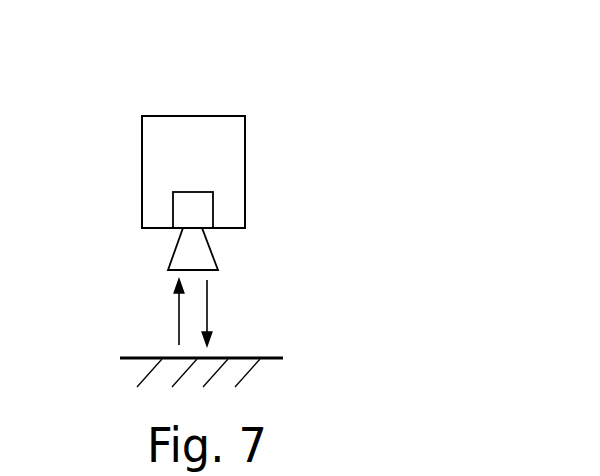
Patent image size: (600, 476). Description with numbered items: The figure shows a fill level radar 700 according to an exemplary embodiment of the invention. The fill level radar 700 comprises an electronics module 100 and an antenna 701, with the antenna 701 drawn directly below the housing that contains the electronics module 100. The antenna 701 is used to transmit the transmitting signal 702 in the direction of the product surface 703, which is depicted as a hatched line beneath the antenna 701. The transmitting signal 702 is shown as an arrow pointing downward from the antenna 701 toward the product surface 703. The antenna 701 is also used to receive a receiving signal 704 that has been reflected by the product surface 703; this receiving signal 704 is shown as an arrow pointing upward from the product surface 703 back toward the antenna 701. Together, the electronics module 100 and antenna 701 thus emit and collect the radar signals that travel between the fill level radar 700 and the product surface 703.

The fill level radar 700 is at (275, 66).
The electronics module 100 is at (215, 207).
The antenna 701 is at (216, 253).
The transmitting signal 702 is at (208, 307).
The product surface 703 is at (270, 359).
The receiving signal 704 is at (179, 317).